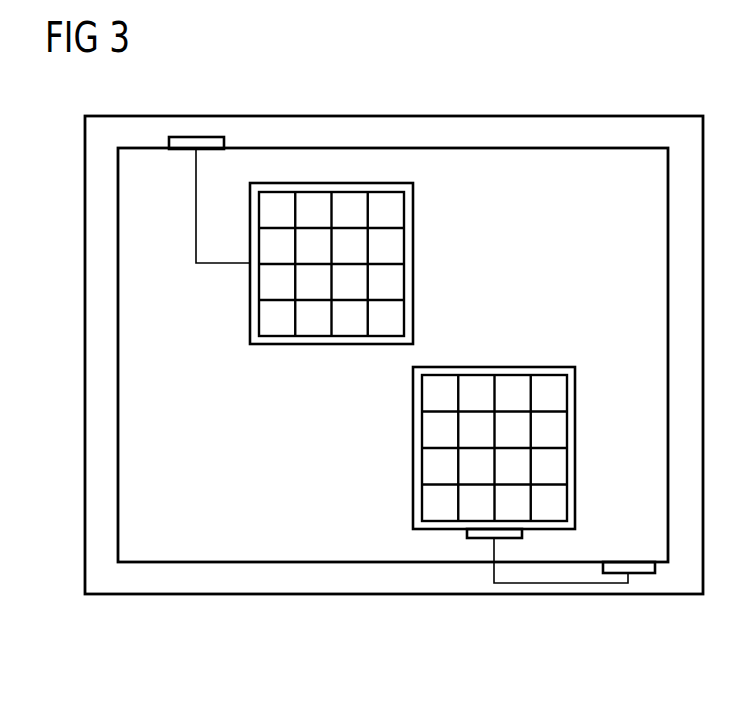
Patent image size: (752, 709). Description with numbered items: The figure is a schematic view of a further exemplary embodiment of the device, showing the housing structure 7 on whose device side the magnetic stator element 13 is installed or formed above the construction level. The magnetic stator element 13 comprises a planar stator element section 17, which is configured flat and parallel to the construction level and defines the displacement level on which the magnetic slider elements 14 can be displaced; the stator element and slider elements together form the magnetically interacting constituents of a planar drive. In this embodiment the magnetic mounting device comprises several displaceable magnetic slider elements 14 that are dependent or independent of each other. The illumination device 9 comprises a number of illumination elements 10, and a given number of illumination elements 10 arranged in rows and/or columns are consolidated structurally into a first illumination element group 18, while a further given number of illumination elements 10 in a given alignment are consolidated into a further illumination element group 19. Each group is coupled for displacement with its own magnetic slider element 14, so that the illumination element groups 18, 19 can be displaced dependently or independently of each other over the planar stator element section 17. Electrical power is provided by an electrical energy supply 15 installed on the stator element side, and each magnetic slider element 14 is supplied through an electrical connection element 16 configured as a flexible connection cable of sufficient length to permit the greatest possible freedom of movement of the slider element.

The housing structure 7 is at (582, 116).
The magnetic stator element 13 is at (393, 314).
The planar stator element section 17 is at (460, 168).
The electrical energy supply 15 is at (196, 137).
The electrical connection element 16 is at (196, 185).
The illumination device 9 is at (410, 360).
The magnetic slider element 14 is at (410, 360).
The illumination element 10 is at (277, 278).
The first illumination element group 18 is at (391, 472).
The further illumination element group 19 is at (305, 366).